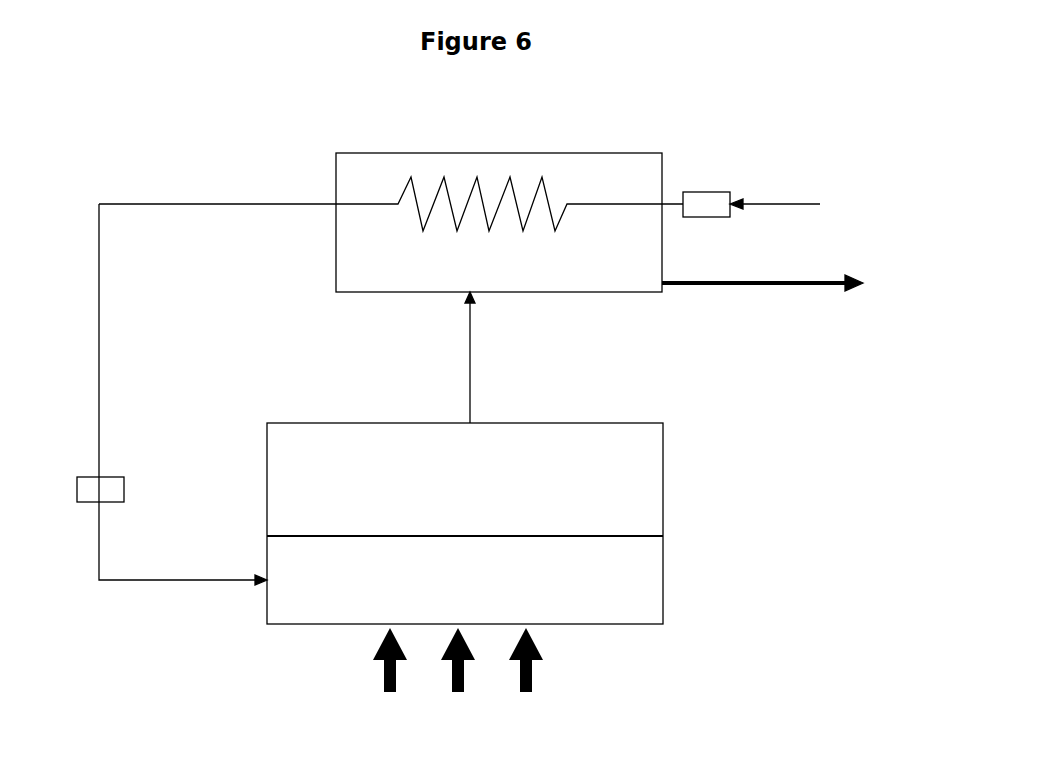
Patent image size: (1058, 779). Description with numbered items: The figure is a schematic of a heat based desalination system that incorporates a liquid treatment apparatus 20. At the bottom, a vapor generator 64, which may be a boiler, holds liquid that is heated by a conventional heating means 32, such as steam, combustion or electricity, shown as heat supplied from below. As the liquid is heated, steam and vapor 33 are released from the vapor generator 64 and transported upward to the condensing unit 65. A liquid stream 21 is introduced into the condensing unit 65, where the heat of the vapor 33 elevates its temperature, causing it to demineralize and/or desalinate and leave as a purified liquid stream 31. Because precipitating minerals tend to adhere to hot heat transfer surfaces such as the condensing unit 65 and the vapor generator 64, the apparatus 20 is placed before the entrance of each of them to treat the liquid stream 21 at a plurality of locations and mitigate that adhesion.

The condensing unit 65 is at (529, 153).
The apparatus 20 is at (722, 192).
The liquid stream 21 is at (823, 198).
The purified liquid stream 31 is at (790, 278).
The vapor 33 is at (668, 473).
The vapor generator 64 is at (668, 578).
The heating means 32 is at (458, 680).